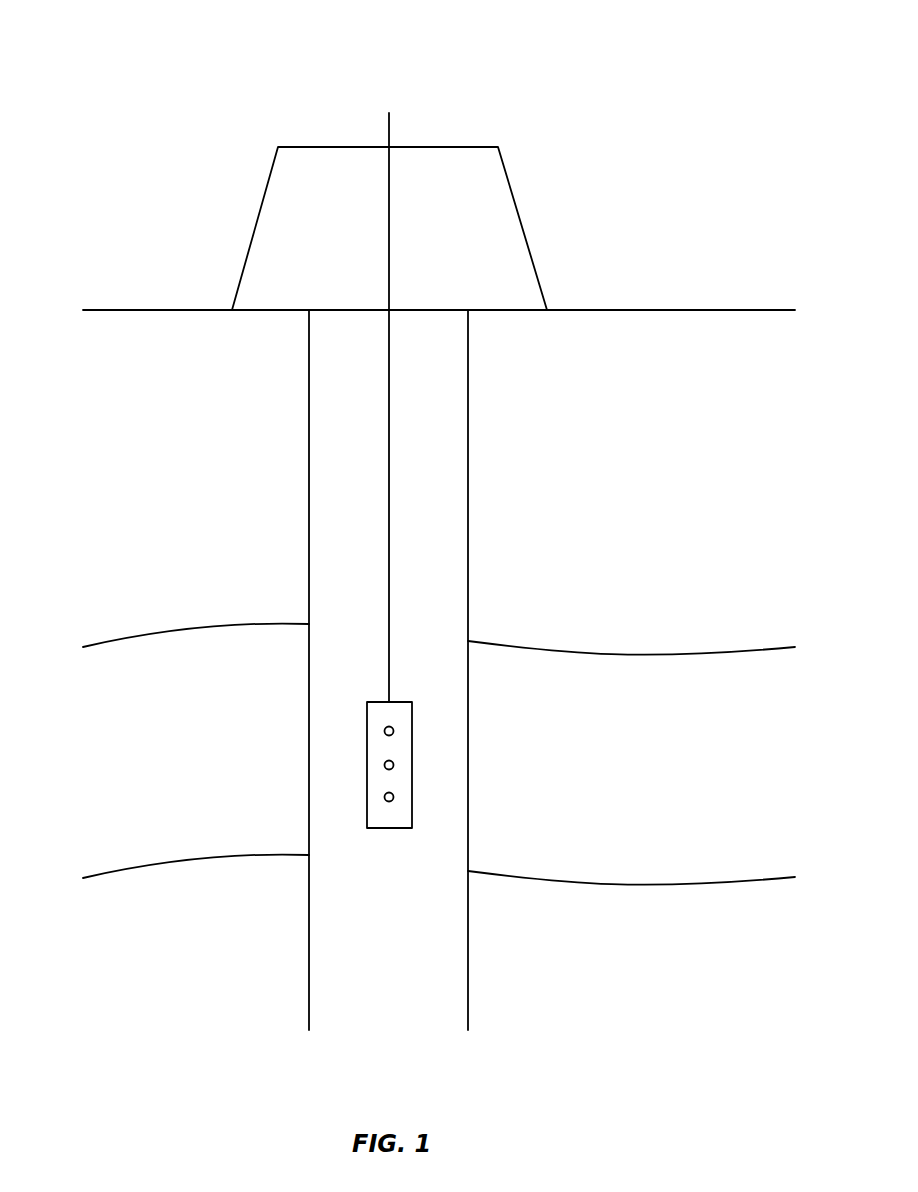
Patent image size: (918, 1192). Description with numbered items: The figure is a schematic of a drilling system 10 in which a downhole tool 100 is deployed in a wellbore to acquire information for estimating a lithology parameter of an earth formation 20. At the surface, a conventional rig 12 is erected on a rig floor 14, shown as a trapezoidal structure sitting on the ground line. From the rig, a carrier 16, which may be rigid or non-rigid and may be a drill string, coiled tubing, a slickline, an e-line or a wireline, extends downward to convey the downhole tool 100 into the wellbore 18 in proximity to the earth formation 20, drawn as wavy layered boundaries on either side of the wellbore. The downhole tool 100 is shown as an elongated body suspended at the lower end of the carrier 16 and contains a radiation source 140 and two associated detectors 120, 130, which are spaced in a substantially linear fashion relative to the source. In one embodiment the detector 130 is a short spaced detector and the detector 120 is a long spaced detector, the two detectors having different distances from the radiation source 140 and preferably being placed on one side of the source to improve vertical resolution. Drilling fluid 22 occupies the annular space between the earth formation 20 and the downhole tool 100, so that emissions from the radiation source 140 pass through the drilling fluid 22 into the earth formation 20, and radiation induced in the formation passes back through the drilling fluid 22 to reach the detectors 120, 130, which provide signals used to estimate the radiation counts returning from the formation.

The drilling system 10 is at (570, 68).
The rig 12 is at (526, 235).
The rig floor 14 is at (520, 311).
The carrier 16 is at (389, 508).
The wellbore 18 is at (468, 405).
The earth formation 20 is at (685, 673).
The drilling fluid 22 is at (330, 815).
The downhole tool 100 is at (367, 712).
The detector 120 is at (394, 731).
The detector 130 is at (394, 765).
The radiation source 140 is at (394, 797).